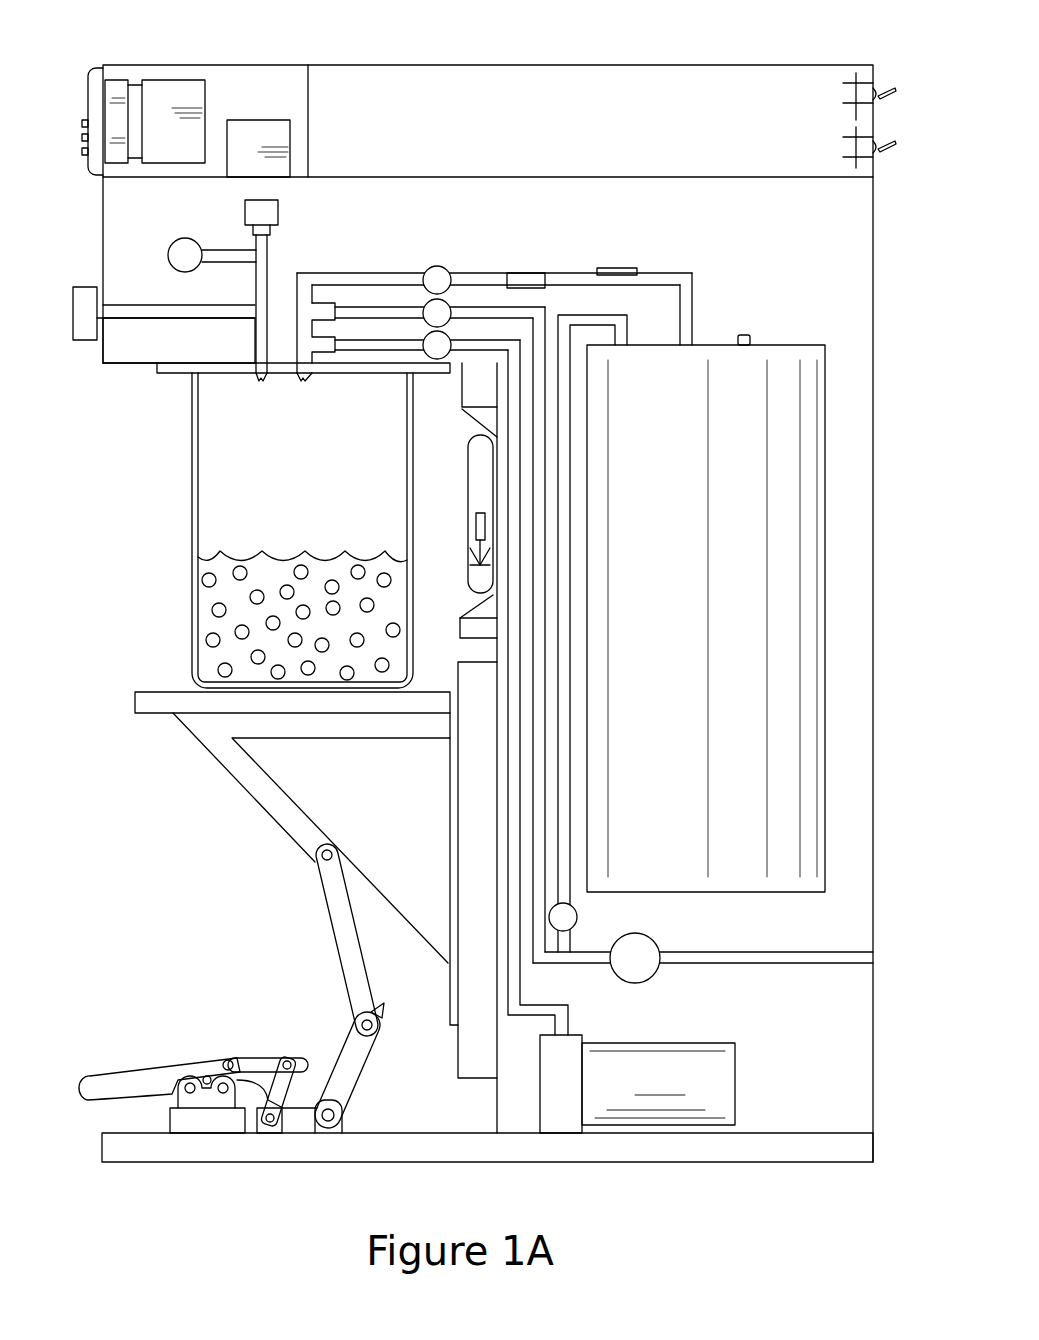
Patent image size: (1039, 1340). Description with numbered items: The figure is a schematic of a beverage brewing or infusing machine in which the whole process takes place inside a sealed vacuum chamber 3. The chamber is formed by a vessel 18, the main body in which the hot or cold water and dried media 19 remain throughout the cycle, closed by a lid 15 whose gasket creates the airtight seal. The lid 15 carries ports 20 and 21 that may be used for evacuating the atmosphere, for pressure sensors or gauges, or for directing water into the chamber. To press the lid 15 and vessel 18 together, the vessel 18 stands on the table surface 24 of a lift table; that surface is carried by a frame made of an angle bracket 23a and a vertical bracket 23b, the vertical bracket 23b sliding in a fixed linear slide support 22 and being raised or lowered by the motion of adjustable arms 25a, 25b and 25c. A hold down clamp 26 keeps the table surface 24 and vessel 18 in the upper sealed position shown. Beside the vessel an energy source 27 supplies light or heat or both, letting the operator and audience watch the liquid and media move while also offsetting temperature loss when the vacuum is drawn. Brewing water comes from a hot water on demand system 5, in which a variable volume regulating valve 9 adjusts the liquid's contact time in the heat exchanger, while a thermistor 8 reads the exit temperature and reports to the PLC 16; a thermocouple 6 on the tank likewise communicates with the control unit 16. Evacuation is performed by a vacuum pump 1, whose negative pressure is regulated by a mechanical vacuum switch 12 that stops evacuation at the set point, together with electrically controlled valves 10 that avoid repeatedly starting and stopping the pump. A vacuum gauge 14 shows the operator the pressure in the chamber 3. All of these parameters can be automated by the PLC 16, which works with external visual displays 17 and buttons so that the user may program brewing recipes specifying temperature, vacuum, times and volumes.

The vacuum pump 1 is at (715, 1080).
The sealed vacuum chamber 3 is at (237, 495).
The hot water on demand system 5 is at (795, 466).
The thermocouple 6 is at (744, 335).
The thermistor 8 is at (620, 268).
The variable volume regulating valve 9 is at (528, 273).
The electrically controlled valve 10 is at (437, 358).
The mechanical vacuum switch 12 is at (255, 212).
The vacuum gauge 14 is at (88, 290).
The lid 15 is at (157, 371).
The PLC 16 is at (165, 90).
The external visual display 17 is at (97, 104).
The vessel 18 is at (197, 521).
The dried media and liquid 19 is at (215, 597).
The lid port 20 is at (305, 381).
The lid port 21 is at (260, 381).
The fixed linear slide support 22 is at (475, 783).
The angle bracket 23a is at (237, 762).
The vertical bracket 23b is at (452, 824).
The table surface 24 is at (147, 703).
The adjustable arm 25a is at (290, 1060).
The adjustable arm 25b is at (337, 1063).
The adjustable arm 25c is at (330, 920).
The hold down clamp 26 is at (105, 1087).
The energy source 27 is at (467, 468).